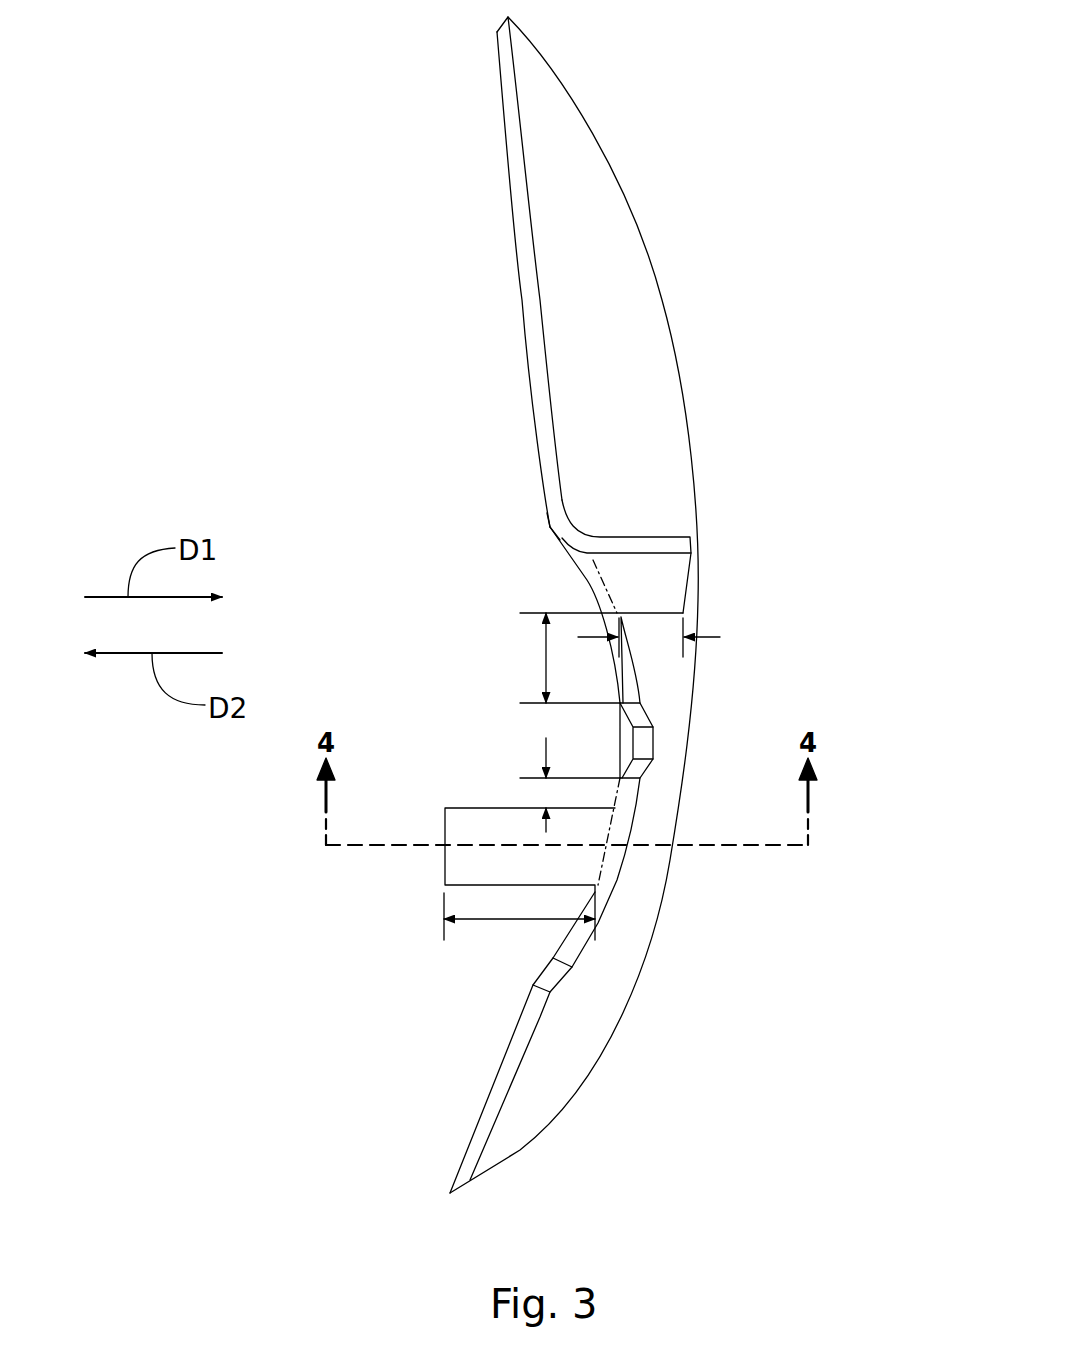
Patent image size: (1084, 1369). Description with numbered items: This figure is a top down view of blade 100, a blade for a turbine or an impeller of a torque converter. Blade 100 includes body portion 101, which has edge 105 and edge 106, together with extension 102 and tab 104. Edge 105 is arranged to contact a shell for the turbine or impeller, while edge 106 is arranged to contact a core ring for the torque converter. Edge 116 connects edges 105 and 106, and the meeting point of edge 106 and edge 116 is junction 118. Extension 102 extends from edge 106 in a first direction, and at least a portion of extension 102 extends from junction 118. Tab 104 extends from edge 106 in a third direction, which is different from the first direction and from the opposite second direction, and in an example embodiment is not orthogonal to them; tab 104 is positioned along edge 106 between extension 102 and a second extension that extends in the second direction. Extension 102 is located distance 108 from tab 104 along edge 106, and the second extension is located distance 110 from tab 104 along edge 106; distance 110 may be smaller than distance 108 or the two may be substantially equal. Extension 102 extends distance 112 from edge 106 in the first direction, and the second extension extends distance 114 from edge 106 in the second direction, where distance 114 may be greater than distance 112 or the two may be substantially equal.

The blade 100 is at (628, 598).
The body portion 101 is at (652, 232).
The extension 102 is at (657, 530).
The tab 104 is at (660, 743).
The edge 105 is at (668, 324).
The edge 106 is at (640, 668).
The distance 108 is at (545, 667).
The distance 110 is at (545, 753).
The distance 112 is at (704, 637).
The distance 114 is at (517, 922).
The edge 116 is at (532, 308).
The junction 118 is at (550, 527).